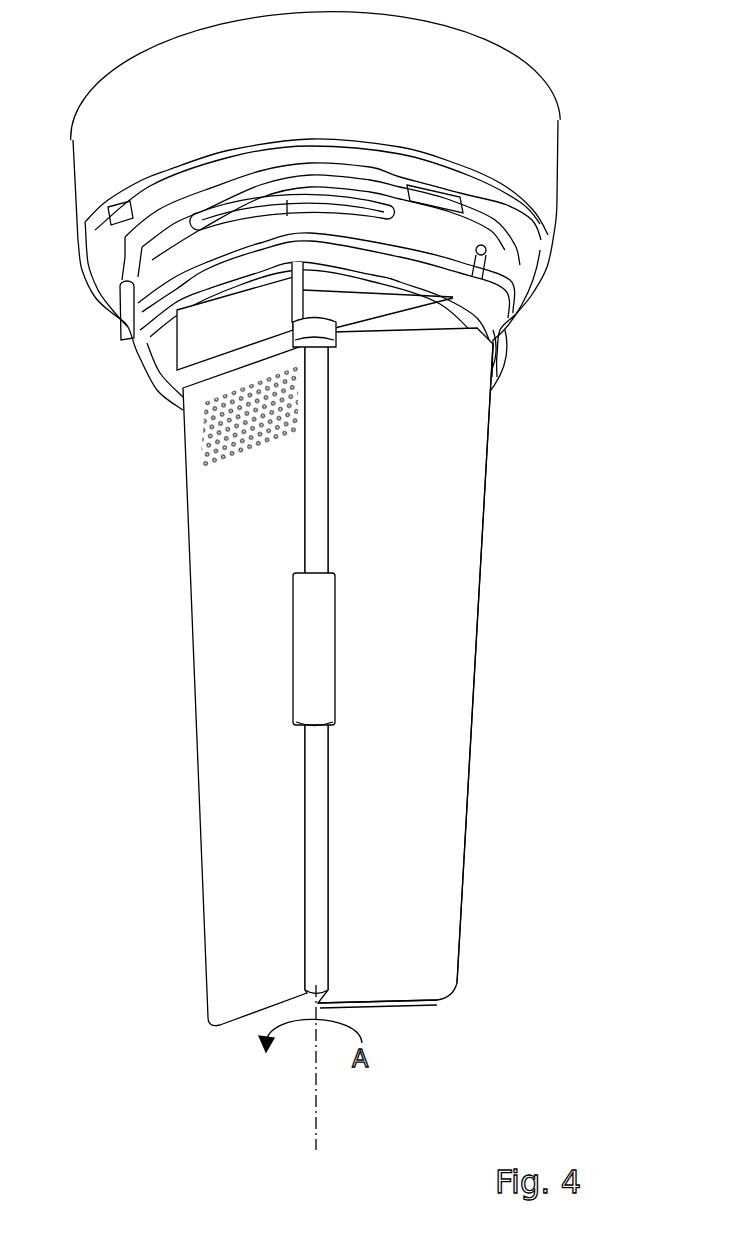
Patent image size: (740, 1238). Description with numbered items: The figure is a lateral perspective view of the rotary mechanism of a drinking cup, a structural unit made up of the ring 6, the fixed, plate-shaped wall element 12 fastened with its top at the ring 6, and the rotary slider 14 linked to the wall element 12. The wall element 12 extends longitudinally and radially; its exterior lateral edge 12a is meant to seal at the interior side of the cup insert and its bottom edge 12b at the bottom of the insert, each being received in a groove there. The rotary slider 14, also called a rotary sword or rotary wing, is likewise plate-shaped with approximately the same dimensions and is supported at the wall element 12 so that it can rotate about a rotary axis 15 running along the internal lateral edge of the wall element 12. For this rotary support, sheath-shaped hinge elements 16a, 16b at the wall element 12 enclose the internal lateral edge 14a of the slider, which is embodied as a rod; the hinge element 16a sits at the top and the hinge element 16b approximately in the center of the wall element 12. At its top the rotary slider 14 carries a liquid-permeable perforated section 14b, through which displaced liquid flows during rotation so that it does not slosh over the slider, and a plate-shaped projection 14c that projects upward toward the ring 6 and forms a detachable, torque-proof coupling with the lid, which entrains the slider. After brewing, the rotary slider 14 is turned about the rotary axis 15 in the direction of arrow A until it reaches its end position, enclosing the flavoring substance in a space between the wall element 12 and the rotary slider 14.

The ring 6 is at (313, 206).
The fixed wall element 12 is at (405, 665).
The exterior lateral edge 12a is at (477, 683).
The bottom edge 12b is at (420, 1000).
The rotary slider 14 is at (245, 685).
The internal lateral edge 14a is at (320, 485).
The perforated section 14b is at (210, 440).
The plate-shaped projection 14c is at (235, 323).
The rotary axis 15 is at (318, 1133).
The hinge element 16a is at (327, 335).
The hinge element 16b is at (320, 670).